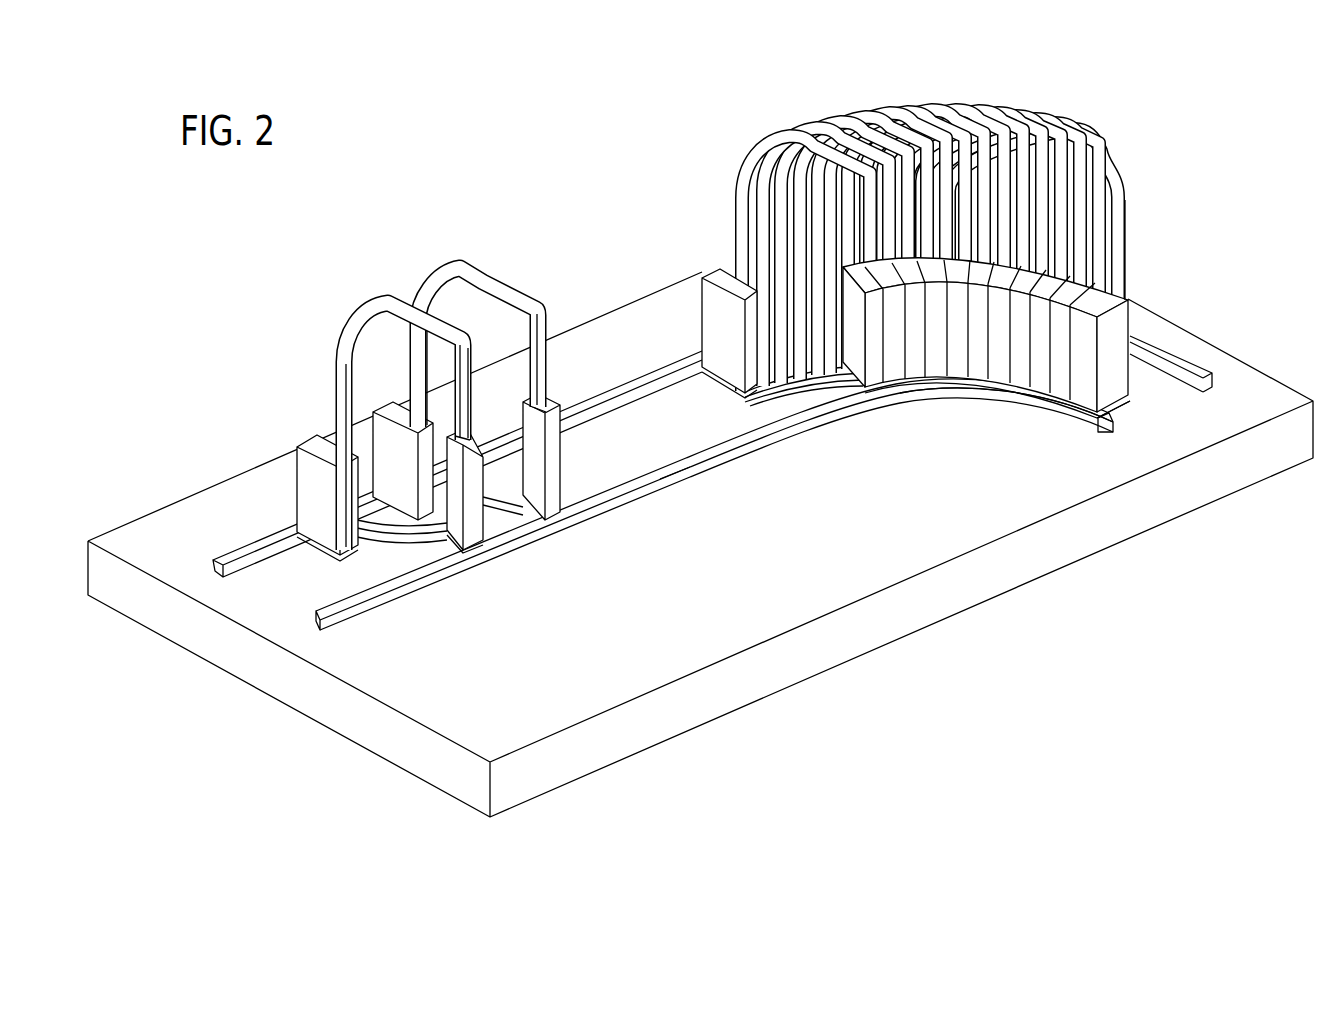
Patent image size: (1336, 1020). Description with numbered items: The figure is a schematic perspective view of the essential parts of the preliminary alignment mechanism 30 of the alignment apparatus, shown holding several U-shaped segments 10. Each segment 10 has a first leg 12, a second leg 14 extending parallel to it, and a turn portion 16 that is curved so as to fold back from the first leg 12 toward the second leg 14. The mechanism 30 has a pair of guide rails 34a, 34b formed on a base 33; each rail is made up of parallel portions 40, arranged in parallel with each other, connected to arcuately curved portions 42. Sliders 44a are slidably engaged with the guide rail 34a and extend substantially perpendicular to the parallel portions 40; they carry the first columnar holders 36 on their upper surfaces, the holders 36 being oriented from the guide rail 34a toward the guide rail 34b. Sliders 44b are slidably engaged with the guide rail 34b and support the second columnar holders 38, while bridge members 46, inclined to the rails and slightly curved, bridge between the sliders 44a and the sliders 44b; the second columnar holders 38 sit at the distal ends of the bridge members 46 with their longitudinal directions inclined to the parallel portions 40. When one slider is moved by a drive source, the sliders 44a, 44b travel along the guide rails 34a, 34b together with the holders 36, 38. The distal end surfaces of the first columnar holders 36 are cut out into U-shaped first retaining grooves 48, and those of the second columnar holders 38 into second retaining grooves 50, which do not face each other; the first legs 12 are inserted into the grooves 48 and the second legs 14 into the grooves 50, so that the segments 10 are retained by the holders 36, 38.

The segment 10 is at (827, 118).
The first leg 12 is at (330, 377).
The second leg 14 is at (470, 380).
The turn portion 16 is at (457, 266).
The preliminary alignment mechanism 30 is at (1236, 152).
The base 33 is at (1252, 465).
The guide rail 34a is at (240, 555).
The guide rail 34b is at (367, 606).
The first columnar holder 36 is at (313, 440).
The second columnar holder 38 is at (1090, 387).
The parallel portion 40 is at (716, 482).
The arcuately curved portion 42 is at (1015, 414).
The slider 44a is at (318, 553).
The slider 44b is at (486, 548).
The bridge member 46 is at (397, 532).
The first retaining groove 48 is at (355, 495).
The second retaining groove 50 is at (472, 437).